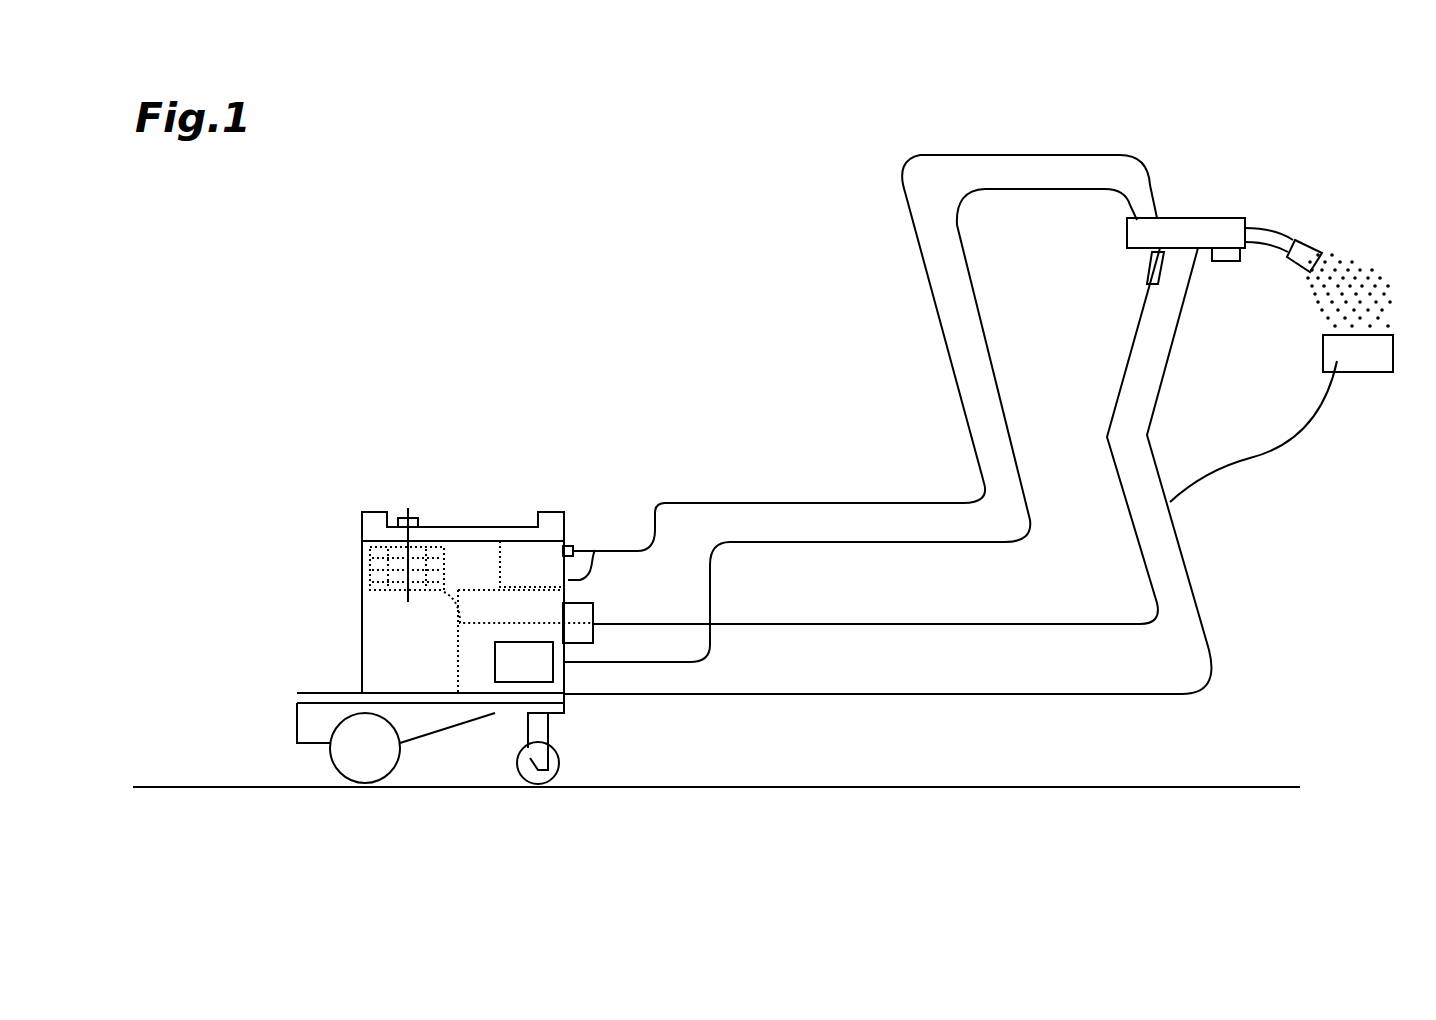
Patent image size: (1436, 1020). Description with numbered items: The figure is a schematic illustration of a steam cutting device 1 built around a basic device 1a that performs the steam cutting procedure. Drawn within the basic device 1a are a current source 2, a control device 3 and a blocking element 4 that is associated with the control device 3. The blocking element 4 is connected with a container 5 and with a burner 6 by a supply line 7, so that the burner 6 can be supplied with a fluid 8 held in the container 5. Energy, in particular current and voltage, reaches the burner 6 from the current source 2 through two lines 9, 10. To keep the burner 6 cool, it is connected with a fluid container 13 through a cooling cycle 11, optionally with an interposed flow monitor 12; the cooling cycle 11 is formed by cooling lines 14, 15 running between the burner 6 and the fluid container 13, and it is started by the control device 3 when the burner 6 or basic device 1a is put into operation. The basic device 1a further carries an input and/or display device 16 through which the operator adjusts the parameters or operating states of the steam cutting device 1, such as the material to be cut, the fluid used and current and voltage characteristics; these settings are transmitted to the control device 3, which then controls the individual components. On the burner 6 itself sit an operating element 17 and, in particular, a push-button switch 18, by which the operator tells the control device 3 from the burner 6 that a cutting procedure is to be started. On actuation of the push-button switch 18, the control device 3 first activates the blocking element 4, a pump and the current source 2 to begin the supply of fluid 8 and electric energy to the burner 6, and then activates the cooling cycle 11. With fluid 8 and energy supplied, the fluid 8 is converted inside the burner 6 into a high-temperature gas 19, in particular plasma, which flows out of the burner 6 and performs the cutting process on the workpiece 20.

The steam cutting device 1 is at (457, 283).
The basic device 1a is at (397, 448).
The current source 2 is at (515, 668).
The control device 3 is at (455, 660).
The blocking element 4 is at (577, 635).
The container 5 is at (377, 557).
The burner 6 is at (1272, 215).
The supply line 7 is at (1137, 513).
The fluid 8 is at (390, 580).
The line 9 is at (878, 541).
The line 10 is at (1198, 598).
The cooling cycle 11 is at (683, 392).
The flow monitor 12 is at (577, 530).
The fluid container 13 is at (523, 555).
The cooling line 14 is at (587, 550).
The cooling line 15 is at (595, 550).
The input and/or display device 16 is at (559, 587).
The operating element 17 is at (1245, 265).
The push-button switch 18 is at (1228, 267).
The high-temperature gas 19 is at (1347, 243).
The workpiece 20 is at (1353, 353).